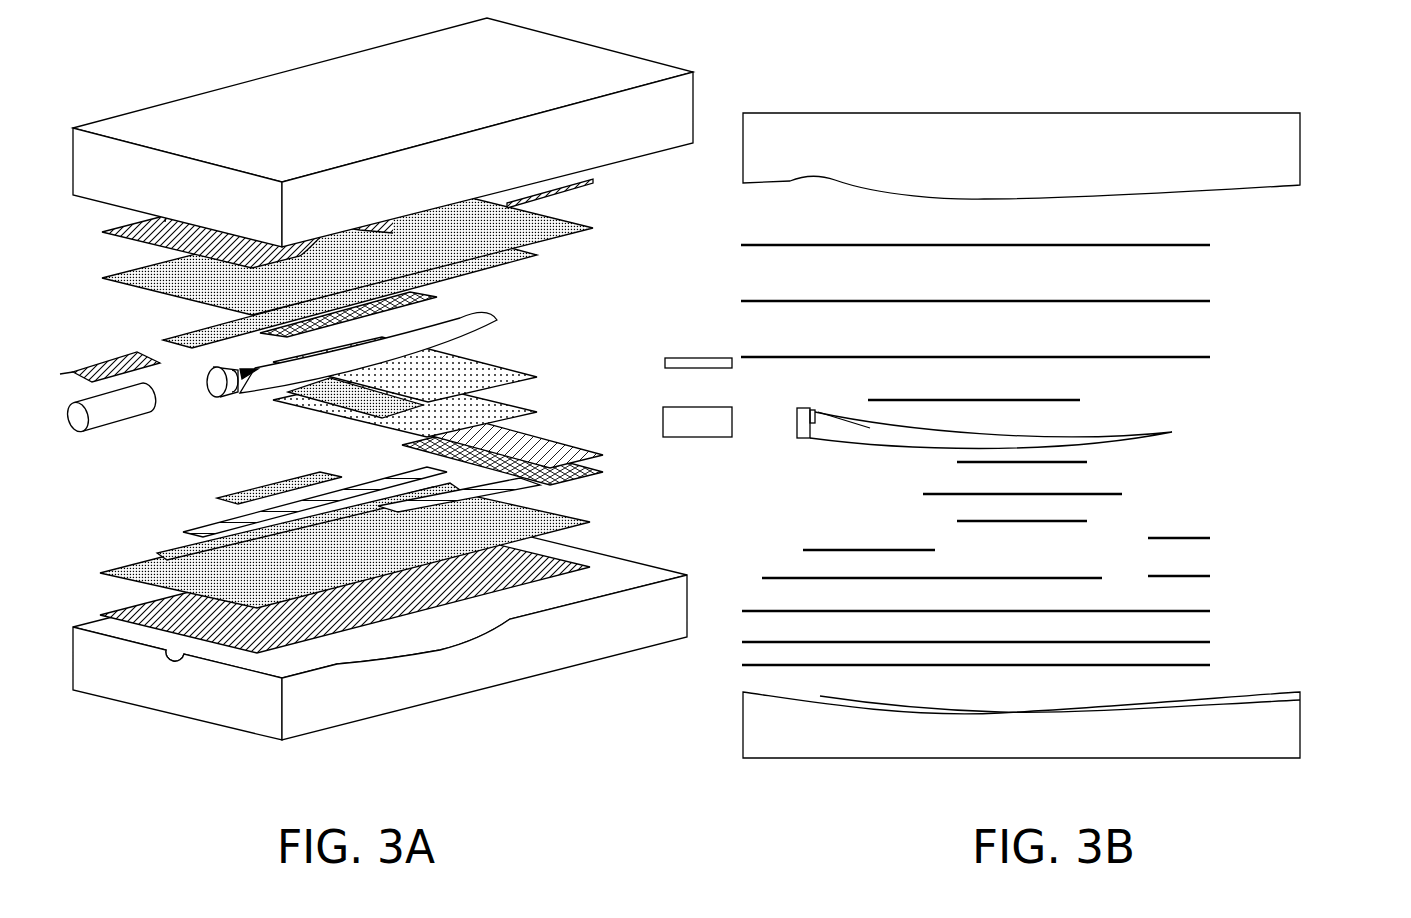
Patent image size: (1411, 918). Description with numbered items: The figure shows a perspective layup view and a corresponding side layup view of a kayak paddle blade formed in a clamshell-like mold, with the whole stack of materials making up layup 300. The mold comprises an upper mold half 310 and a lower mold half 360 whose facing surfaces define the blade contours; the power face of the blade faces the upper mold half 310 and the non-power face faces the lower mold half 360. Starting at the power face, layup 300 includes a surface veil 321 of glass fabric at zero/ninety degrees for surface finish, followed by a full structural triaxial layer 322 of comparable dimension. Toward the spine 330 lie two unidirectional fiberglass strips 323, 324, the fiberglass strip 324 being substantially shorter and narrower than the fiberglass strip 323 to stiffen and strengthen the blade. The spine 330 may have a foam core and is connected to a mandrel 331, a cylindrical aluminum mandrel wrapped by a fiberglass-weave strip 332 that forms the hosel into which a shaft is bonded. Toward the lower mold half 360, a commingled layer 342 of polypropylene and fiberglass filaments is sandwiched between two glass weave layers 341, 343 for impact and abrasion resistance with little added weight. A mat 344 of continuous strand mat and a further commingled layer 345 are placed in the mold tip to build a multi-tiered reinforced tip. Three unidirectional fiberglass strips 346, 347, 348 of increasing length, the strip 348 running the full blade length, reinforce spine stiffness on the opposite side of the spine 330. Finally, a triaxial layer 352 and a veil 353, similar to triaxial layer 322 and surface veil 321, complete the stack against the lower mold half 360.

The layup 300 is at (901, 60).
The upper mold half 310 is at (1300, 122).
The surface veil 321 is at (1188, 245).
The triaxial layer 322 is at (1184, 301).
The fiberglass strip 323 is at (1186, 357).
The fiberglass strip 324 is at (1053, 400).
The spine 330 is at (797, 438).
The mandrel 331 is at (663, 425).
The strip 332 is at (665, 363).
The glass weave layer 341 is at (978, 462).
The commingled layer 342 is at (930, 494).
The glass weave layer 343 is at (1018, 521).
The mat 344 is at (1193, 538).
The commingled layer 345 is at (1193, 576).
The unidirectional fiberglass strip 346 is at (843, 548).
The unidirectional fiberglass strip 347 is at (797, 578).
The unidirectional fiberglass strip 348 is at (1193, 611).
The triaxial layer 352 is at (1193, 642).
The veil 353 is at (1193, 665).
The lower mold half 360 is at (1300, 727).